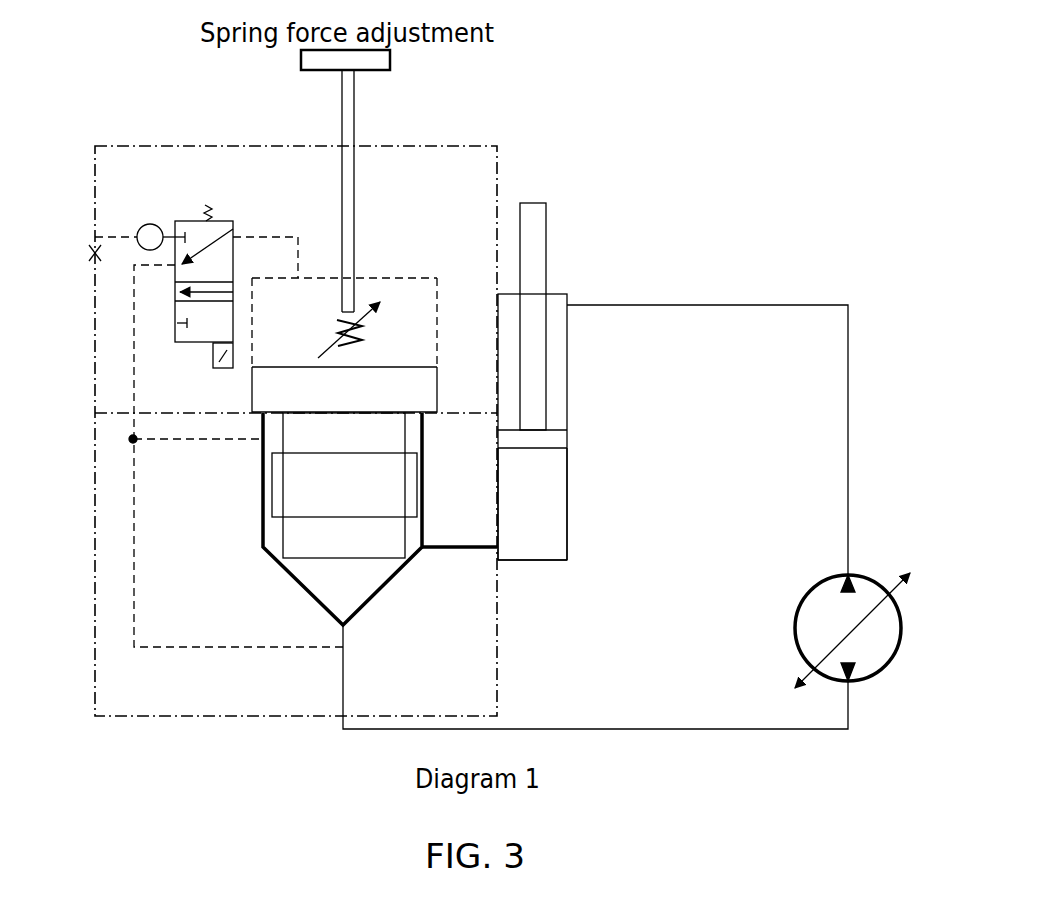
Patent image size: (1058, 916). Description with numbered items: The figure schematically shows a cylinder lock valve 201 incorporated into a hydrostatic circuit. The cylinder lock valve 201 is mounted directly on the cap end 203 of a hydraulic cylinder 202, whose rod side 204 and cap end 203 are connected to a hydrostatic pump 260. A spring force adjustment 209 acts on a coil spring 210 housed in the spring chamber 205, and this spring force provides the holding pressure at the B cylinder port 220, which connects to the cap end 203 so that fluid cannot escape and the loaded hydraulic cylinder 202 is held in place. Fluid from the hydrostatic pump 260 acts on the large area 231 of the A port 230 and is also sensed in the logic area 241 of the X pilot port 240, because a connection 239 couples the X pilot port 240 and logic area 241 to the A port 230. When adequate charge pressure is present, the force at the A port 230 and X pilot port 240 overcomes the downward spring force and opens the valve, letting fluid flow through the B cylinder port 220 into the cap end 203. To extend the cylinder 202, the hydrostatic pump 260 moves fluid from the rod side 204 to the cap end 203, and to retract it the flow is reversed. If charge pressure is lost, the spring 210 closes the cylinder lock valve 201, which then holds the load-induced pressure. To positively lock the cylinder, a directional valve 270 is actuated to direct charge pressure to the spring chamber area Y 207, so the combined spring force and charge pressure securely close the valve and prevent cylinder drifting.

The cylinder lock valve 201 is at (415, 137).
The hydraulic cylinder 202 is at (569, 291).
The cap end 203 is at (543, 562).
The rod side 204 is at (568, 413).
The spring chamber 205 is at (400, 278).
The spring chamber area Y 207 is at (313, 278).
The spring force adjustment 209 is at (315, 70).
The spring 210 is at (363, 326).
The B cylinder port 220 is at (426, 549).
The A port 230 is at (348, 622).
The large area 231 is at (325, 558).
The connection 239 is at (197, 440).
The X pilot port 240 is at (135, 338).
The logic area 241 is at (275, 426).
The hydrostatic pump 260 is at (823, 578).
The directional valve 270 is at (175, 222).